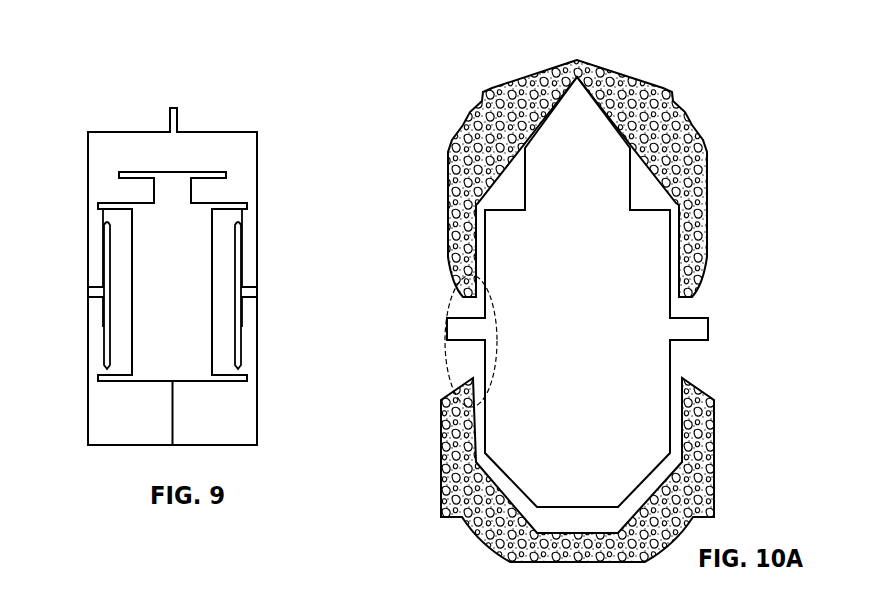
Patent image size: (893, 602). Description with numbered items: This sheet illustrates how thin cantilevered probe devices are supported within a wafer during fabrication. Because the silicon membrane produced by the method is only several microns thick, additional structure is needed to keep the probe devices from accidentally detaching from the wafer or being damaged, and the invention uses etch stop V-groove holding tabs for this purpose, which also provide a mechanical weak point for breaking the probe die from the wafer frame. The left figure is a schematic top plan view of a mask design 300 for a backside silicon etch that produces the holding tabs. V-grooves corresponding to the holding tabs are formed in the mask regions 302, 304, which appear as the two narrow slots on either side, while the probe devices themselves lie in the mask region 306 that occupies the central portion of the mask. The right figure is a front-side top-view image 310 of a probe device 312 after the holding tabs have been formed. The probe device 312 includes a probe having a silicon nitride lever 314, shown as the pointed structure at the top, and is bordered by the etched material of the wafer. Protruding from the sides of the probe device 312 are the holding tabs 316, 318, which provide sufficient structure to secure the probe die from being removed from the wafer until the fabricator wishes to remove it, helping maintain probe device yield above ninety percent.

In FIG. 9, the mask design 300 is at (75, 109).
In FIG. 9, the mask region 302 is at (227, 253).
In FIG. 9, the mask region 304 is at (117, 263).
In FIG. 9, the mask region 306 is at (164, 189).
In FIG. 10A, the top-view image 310 is at (450, 66).
In FIG. 10A, the probe device 312 is at (619, 122).
In FIG. 10A, the silicon nitride lever 314 is at (557, 140).
In FIG. 10A, the holding tab 316 is at (457, 330).
In FIG. 10A, the holding tab 318 is at (695, 332).